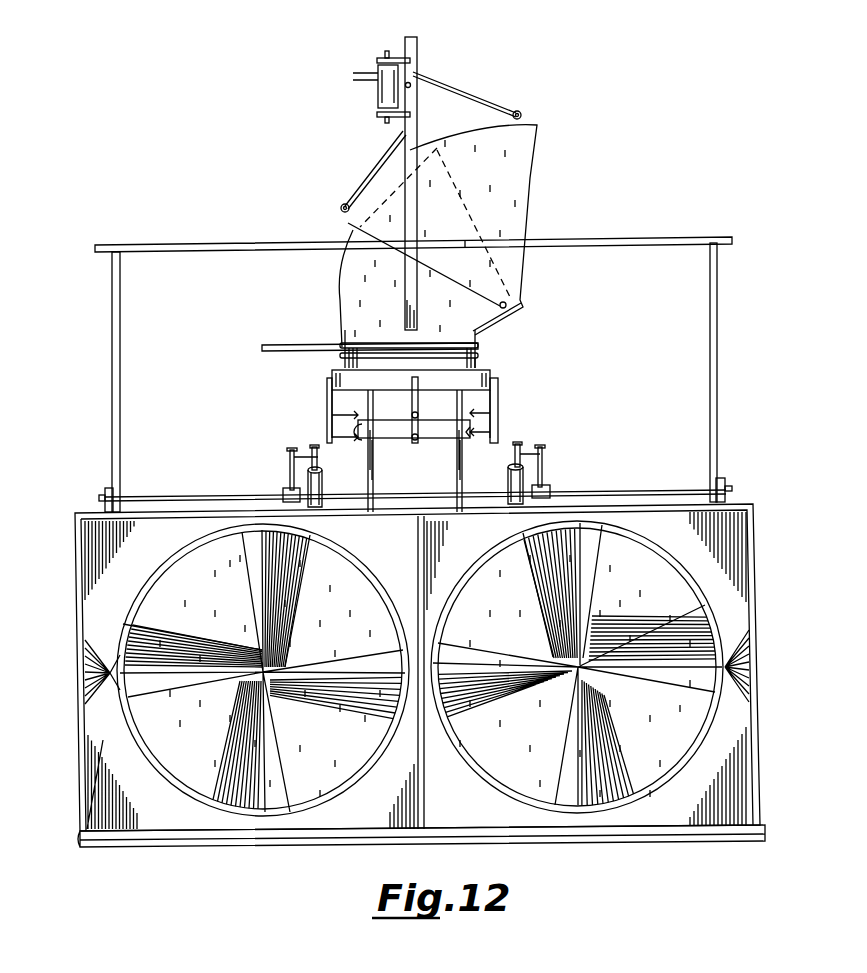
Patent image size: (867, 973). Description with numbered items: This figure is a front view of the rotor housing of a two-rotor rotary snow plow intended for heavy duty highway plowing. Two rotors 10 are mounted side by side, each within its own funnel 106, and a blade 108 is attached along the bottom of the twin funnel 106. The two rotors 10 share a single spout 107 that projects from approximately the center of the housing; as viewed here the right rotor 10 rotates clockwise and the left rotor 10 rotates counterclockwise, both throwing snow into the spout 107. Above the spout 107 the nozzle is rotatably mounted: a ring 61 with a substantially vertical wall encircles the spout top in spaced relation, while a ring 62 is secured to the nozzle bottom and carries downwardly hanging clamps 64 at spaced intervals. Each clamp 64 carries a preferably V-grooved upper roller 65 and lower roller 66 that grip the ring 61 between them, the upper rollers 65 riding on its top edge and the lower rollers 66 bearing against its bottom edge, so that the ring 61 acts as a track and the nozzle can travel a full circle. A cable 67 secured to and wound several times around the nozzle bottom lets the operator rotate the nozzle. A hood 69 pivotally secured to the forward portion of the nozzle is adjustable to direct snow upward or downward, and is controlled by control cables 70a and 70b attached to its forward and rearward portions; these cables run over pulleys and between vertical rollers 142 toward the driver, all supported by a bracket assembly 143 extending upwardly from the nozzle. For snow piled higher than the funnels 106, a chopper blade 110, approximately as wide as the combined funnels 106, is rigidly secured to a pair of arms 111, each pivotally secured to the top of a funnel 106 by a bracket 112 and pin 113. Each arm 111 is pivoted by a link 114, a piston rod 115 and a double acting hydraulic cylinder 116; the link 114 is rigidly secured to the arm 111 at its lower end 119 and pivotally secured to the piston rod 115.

The rotor 10 is at (127, 718).
The ring 61 is at (497, 433).
The ring 62 is at (493, 369).
The clamp 64 is at (327, 392).
The upper roller 65 is at (356, 415).
The lower roller 66 is at (362, 431).
The cable 67 is at (279, 344).
The hood 69 is at (537, 126).
The control cable 70a is at (470, 94).
The control cable 70b is at (387, 153).
The funnel 106 is at (78, 799).
The spout 107 is at (372, 478).
The blade 108 is at (303, 846).
The chopper blade 110 is at (568, 239).
The arm 111 is at (112, 373).
The bracket 112 is at (99, 500).
The pin 113 is at (103, 494).
The link 114 is at (288, 466).
The piston rod 115 is at (318, 462).
The double acting hydraulic cylinder 116 is at (318, 484).
The lower end of arm 119 is at (642, 492).
The vertical rollers 142 is at (378, 98).
The bracket assembly 143 is at (417, 47).